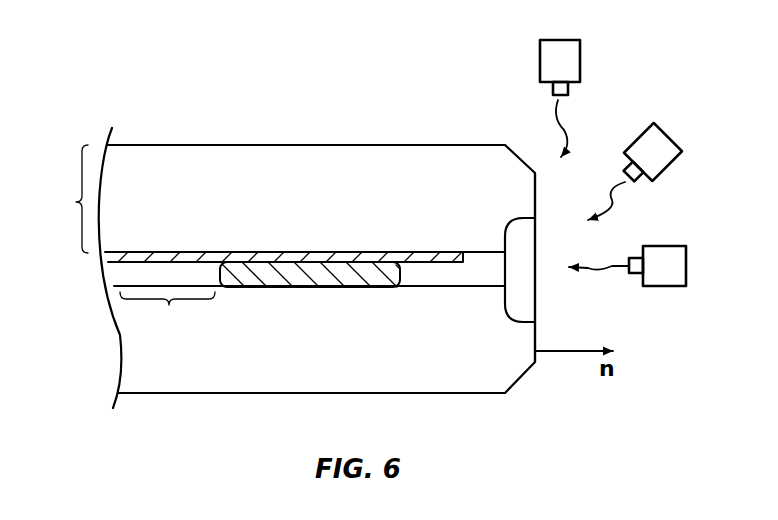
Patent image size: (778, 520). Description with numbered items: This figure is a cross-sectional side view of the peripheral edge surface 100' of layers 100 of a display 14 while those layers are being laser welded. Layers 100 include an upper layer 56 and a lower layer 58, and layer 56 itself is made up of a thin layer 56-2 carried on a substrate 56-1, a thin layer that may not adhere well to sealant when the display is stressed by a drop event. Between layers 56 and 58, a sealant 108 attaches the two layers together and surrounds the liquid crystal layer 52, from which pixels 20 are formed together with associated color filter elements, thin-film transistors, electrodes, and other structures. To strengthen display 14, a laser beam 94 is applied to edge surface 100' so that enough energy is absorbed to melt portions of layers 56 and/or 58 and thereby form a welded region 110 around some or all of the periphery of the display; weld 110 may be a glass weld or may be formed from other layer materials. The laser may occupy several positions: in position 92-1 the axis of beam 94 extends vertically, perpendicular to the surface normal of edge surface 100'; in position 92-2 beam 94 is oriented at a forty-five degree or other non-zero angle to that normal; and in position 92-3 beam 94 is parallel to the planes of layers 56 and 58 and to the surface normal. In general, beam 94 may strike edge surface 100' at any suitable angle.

The display 14 is at (332, 71).
The layers 100 is at (317, 305).
The edge surface 100' is at (569, 267).
The layer 56 is at (69, 199).
The substrate 56-1 is at (165, 153).
The layer 56-2 is at (220, 249).
The liquid crystal layer 52 is at (118, 274).
The pixels 20 is at (167, 311).
The sealant 108 is at (278, 282).
The layer 58 is at (124, 339).
The welded region 110 is at (529, 306).
The laser position 92-1 is at (581, 66).
The laser position 92-2 is at (672, 164).
The laser position 92-3 is at (687, 266).
The laser beam 94 is at (567, 128).